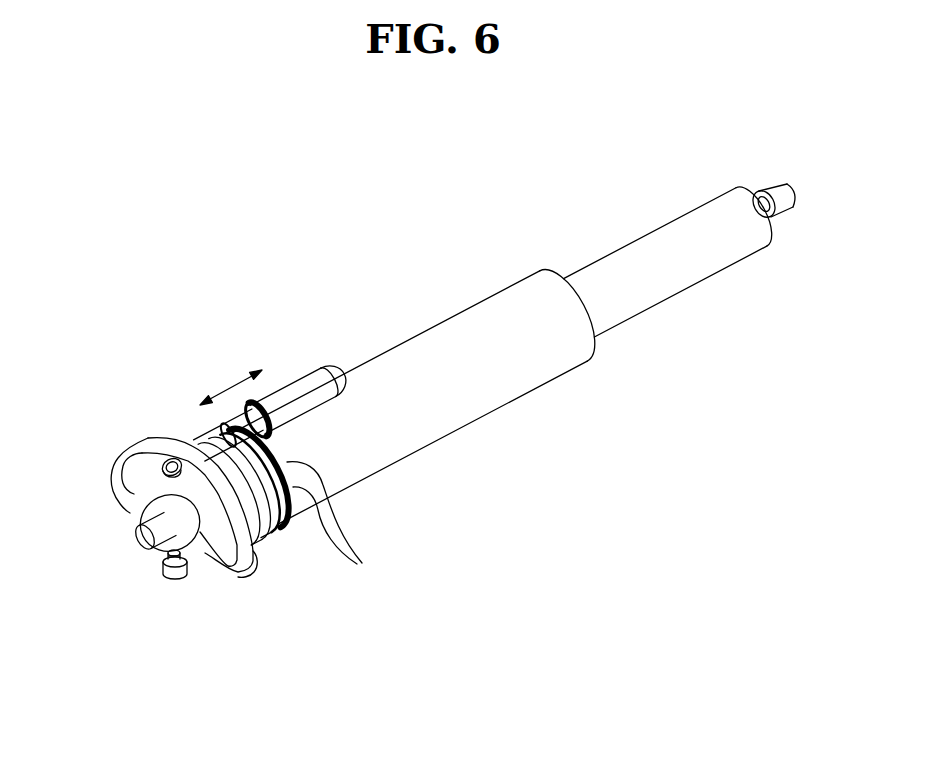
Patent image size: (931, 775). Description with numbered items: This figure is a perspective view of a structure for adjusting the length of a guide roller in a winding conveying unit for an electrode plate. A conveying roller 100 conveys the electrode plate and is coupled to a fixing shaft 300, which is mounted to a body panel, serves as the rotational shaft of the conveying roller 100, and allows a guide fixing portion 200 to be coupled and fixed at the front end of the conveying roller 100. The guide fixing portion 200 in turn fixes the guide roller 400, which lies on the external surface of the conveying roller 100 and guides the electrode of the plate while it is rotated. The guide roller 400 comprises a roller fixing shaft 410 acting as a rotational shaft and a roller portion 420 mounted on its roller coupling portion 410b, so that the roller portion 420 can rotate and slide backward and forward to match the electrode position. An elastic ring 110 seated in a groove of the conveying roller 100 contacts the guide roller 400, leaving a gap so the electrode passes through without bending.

The conveying roller 100 is at (497, 431).
The elastic ring 110 is at (349, 522).
The guide fixing portion 200 is at (114, 527).
The fixing shaft 300 is at (688, 312).
The guide roller 400 is at (329, 356).
The roller fixing shaft 410 is at (200, 443).
The roller coupling portion 410b is at (247, 428).
The roller portion 420 is at (343, 372).